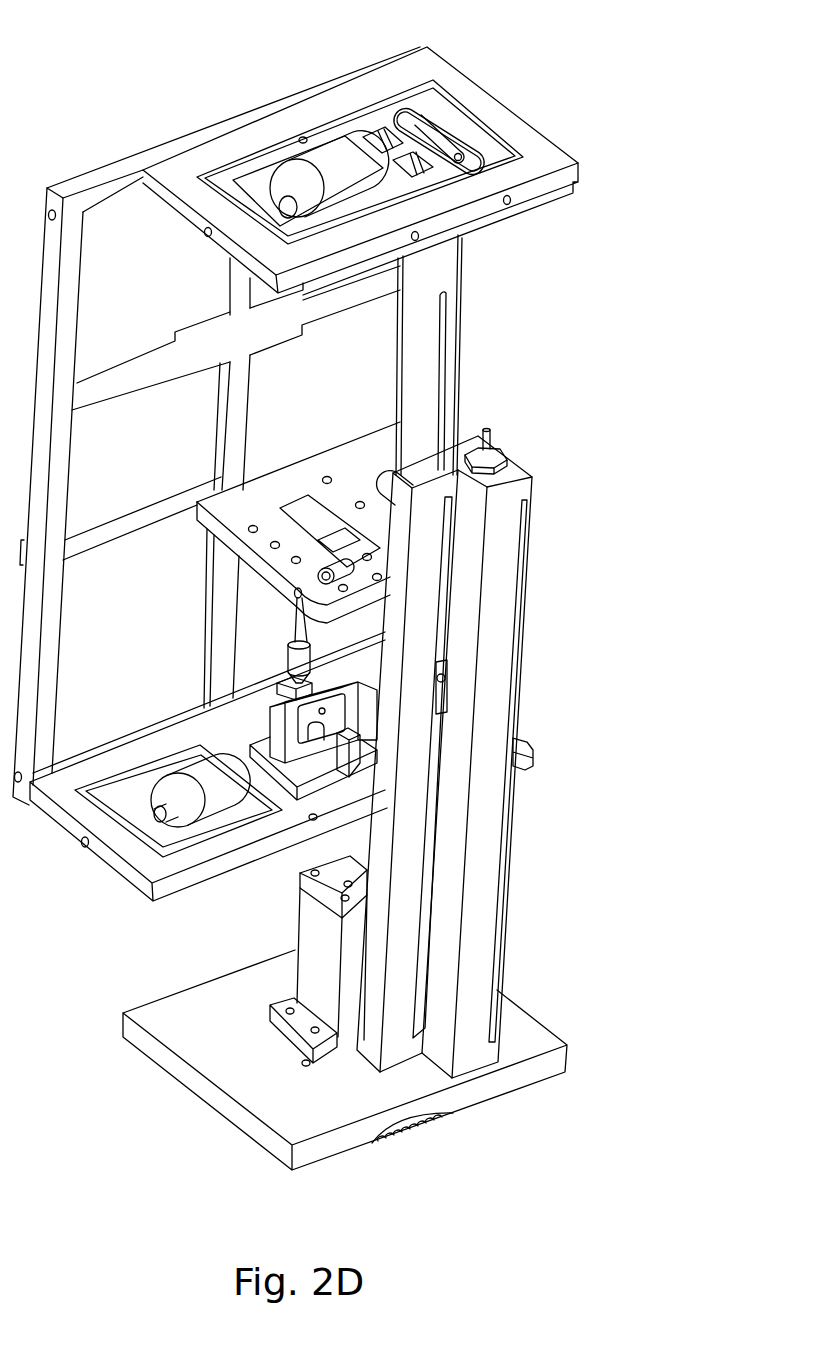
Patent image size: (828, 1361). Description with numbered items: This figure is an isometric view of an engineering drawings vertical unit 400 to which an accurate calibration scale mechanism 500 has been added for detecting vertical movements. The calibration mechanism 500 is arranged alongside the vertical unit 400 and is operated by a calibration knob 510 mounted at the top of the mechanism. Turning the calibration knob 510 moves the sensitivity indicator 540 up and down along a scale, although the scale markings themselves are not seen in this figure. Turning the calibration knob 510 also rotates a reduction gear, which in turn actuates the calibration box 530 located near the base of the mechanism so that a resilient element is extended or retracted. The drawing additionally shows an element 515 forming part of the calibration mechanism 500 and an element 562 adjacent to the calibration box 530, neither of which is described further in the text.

The engineering drawings vertical unit 400 is at (557, 63).
The calibration mechanism 500 is at (622, 587).
The calibration knob 510 is at (498, 448).
The vertical column 515 is at (505, 887).
The calibration box 530 is at (297, 953).
The sensitivity indicator 540 is at (443, 678).
The mounting plate 562 is at (337, 853).